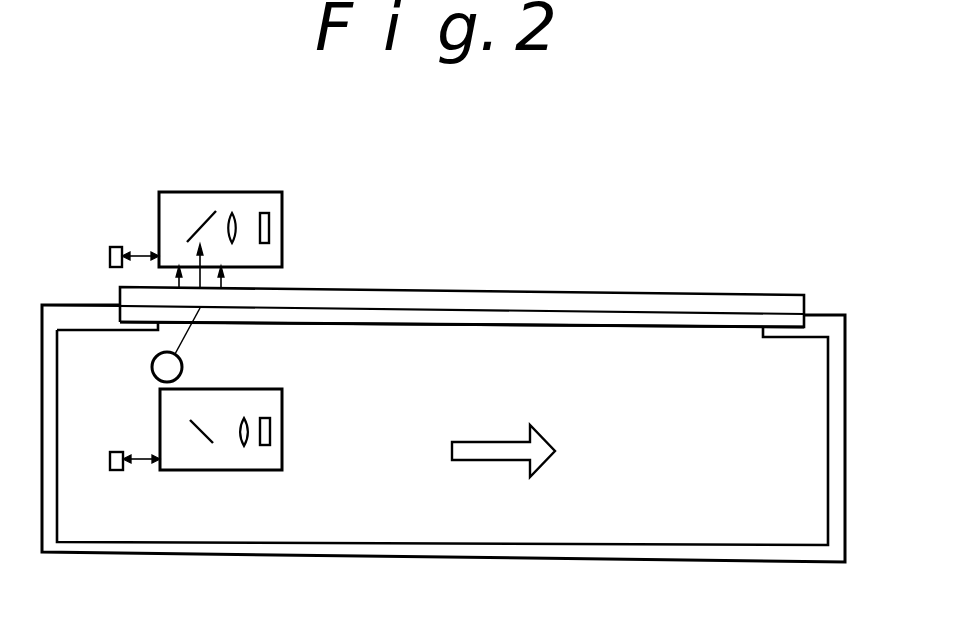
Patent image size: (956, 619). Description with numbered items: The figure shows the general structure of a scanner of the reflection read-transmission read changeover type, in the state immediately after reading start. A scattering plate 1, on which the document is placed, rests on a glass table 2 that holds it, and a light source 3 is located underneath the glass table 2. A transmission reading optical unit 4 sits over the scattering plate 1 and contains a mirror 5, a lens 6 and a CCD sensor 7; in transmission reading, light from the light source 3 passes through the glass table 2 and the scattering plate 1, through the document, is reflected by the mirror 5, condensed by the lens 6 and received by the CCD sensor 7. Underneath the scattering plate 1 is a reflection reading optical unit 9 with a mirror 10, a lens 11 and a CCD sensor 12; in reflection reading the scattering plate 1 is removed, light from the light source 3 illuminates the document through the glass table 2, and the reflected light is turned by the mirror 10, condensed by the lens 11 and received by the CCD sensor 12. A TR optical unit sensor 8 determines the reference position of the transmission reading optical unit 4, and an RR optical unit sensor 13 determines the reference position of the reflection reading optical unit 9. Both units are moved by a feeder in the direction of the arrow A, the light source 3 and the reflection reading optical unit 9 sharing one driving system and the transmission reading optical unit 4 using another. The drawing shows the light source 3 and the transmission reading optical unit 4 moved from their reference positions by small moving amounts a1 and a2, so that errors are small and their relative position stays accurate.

The scattering plate 1 is at (624, 304).
The glass table 2 is at (662, 320).
The light source 3 is at (152, 368).
The transmission reading optical unit 4 is at (157, 196).
The mirror 5 is at (203, 218).
The lens 6 is at (232, 213).
The CCD sensor 7 is at (265, 213).
The TR optical unit sensor 8 is at (110, 256).
The reflection reading optical unit 9 is at (160, 402).
The mirror 10 is at (200, 437).
The lens 11 is at (242, 447).
The CCD sensor 12 is at (307, 428).
The RR optical unit sensor 13 is at (115, 473).
The moving amount a1 is at (140, 458).
The moving amount a2 is at (137, 253).
The arrow A is at (503, 438).